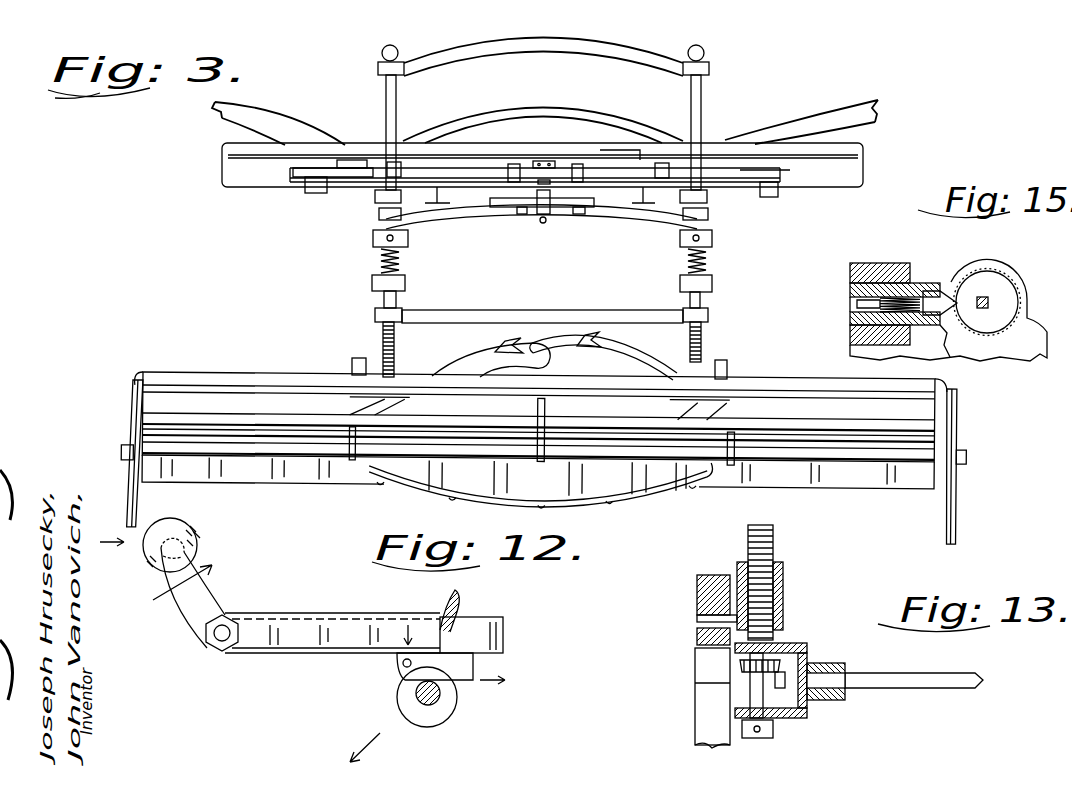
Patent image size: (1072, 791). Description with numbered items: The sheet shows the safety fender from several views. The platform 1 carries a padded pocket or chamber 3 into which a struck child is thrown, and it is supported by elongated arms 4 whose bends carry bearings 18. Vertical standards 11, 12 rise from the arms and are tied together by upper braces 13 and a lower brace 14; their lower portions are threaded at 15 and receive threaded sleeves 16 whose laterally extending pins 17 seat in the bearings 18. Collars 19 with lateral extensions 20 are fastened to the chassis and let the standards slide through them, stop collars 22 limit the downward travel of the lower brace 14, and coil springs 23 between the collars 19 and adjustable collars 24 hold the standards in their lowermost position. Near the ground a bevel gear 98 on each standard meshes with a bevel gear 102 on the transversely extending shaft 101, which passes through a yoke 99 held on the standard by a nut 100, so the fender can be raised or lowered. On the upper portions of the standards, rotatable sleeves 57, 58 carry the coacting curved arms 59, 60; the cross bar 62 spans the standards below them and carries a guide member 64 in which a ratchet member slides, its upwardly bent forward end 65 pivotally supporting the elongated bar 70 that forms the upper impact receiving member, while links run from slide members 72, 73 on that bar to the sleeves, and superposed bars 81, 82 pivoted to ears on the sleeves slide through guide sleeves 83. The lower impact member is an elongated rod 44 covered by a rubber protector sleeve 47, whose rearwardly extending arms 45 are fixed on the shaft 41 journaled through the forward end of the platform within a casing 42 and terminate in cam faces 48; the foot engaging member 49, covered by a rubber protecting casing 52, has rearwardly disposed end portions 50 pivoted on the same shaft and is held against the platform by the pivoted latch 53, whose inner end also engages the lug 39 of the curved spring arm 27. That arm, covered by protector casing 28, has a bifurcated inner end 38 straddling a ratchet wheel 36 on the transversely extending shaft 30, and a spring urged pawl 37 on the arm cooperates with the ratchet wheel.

In FIG. 3, the platform 1 is at (864, 478).
In FIG. 12, the platform 1 is at (503, 638).
In FIG. 3, the pocket or chamber 3 is at (598, 482).
In FIG. 13, the elongated arm 4 is at (708, 710).
In FIG. 3, the vertical standard 11 is at (701, 117).
In FIG. 3, the vertical standard 12 is at (394, 120).
In FIG. 3, the brace 13 is at (530, 42).
In FIG. 3, the lower brace 14 is at (533, 311).
In FIG. 3, the threaded portion 15 is at (704, 340).
In FIG. 13, the threaded portion 15 is at (775, 548).
In FIG. 13, the threaded sleeve 16 is at (786, 593).
In FIG. 13, the laterally extending pin 17 is at (705, 620).
In FIG. 13, the bearing 18 is at (708, 590).
In FIG. 3, the collar 19 is at (400, 283).
In FIG. 3, the lateral extension 20 is at (641, 362).
In FIG. 3, the stop collar 22 is at (376, 318).
In FIG. 3, the coil spring 23 is at (380, 263).
In FIG. 3, the adjustable collar 24 is at (373, 235).
In FIG. 3, the curved spring arm 27 is at (458, 376).
In FIG. 15, the curved spring arm 27 is at (856, 310).
In FIG. 15, the protector casing 28 is at (870, 268).
In FIG. 15, the transversely extending shaft 30 is at (989, 298).
In FIG. 15, the ratchet wheel 36 is at (1001, 306).
In FIG. 15, the spring urged pawl 37 is at (936, 298).
In FIG. 15, the bifurcated inner end 38 is at (976, 352).
In FIG. 3, the lug 39 is at (498, 345).
In FIG. 12, the shaft 41 is at (222, 652).
In FIG. 3, the casing or housing 42 is at (295, 447).
In FIG. 3, the elongated rod 44 is at (259, 420).
In FIG. 12, the elongated rod 44 is at (172, 538).
In FIG. 3, the rearwardly extending arm 45 is at (129, 478).
In FIG. 12, the rearwardly extending arm 45 is at (193, 603).
In FIG. 12, the rubber protector sleeve 47 is at (157, 552).
In FIG. 3, the cam face 48 is at (972, 458).
In FIG. 12, the cam face 48 is at (461, 613).
In FIG. 3, the foot engaging member 49 is at (186, 370).
In FIG. 3, the end portion 50 is at (138, 385).
In FIG. 12, the end portion 50 is at (416, 692).
In FIG. 12, the rubber protecting casing 52 is at (451, 702).
In FIG. 12, the pivoted latch 53 is at (474, 668).
In FIG. 3, the sleeve 57 is at (693, 172).
In FIG. 3, the sleeve 58 is at (388, 165).
In FIG. 3, the coacting curved arm 59 is at (838, 120).
In FIG. 3, the coacting curved arm 60 is at (272, 120).
In FIG. 3, the cross bar 62 is at (480, 224).
In FIG. 3, the guide member 64 is at (566, 215).
In FIG. 3, the upwardly bent forward end 65 is at (540, 219).
In FIG. 3, the elongated bar 70 is at (831, 188).
In FIG. 3, the link 72 is at (628, 156).
In FIG. 3, the clip 73 is at (316, 193).
In FIG. 3, the superposed bar 81 is at (644, 182).
In FIG. 3, the superposed bar 82 is at (440, 170).
In FIG. 3, the guide sleeve 83 is at (580, 166).
In FIG. 13, the bevel gear 98 is at (796, 645).
In FIG. 13, the yoke 99 is at (816, 702).
In FIG. 13, the nut 100 is at (772, 739).
In FIG. 13, the transversely extending shaft 101 is at (955, 684).
In FIG. 13, the bevel gear 102 is at (812, 658).